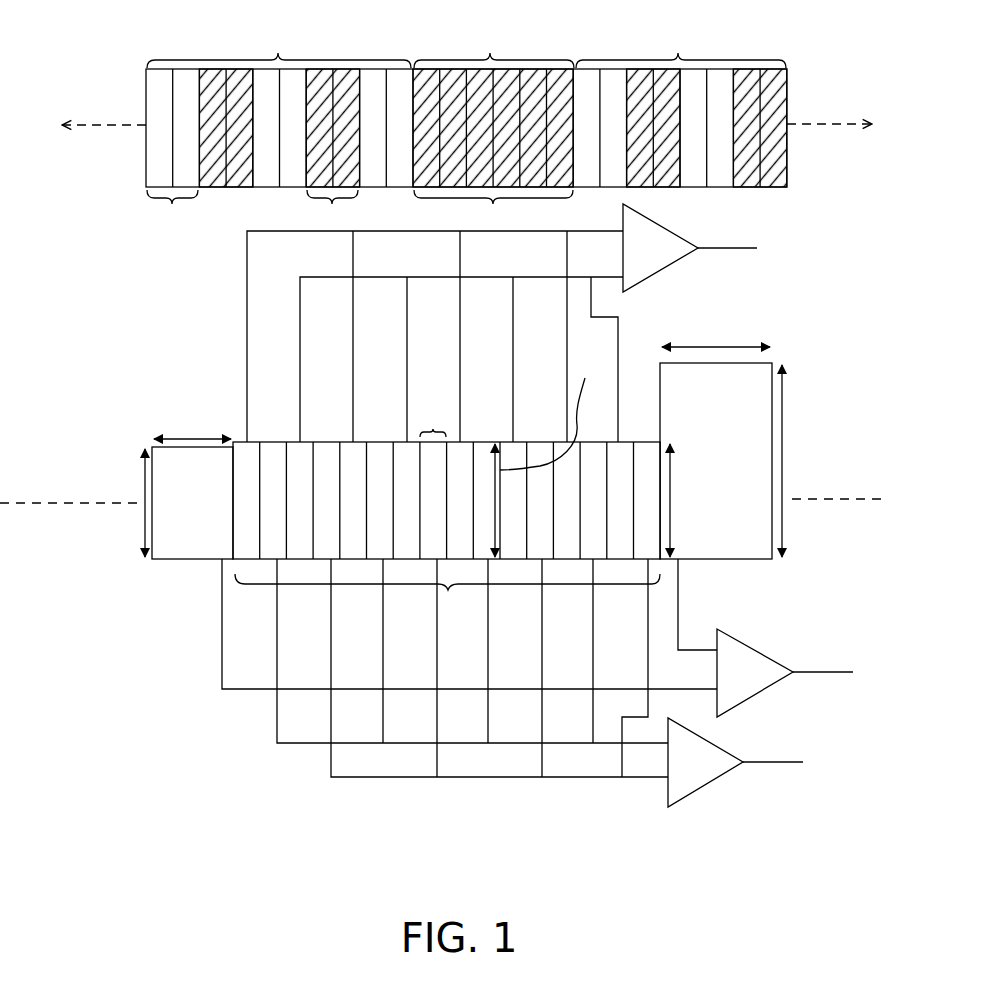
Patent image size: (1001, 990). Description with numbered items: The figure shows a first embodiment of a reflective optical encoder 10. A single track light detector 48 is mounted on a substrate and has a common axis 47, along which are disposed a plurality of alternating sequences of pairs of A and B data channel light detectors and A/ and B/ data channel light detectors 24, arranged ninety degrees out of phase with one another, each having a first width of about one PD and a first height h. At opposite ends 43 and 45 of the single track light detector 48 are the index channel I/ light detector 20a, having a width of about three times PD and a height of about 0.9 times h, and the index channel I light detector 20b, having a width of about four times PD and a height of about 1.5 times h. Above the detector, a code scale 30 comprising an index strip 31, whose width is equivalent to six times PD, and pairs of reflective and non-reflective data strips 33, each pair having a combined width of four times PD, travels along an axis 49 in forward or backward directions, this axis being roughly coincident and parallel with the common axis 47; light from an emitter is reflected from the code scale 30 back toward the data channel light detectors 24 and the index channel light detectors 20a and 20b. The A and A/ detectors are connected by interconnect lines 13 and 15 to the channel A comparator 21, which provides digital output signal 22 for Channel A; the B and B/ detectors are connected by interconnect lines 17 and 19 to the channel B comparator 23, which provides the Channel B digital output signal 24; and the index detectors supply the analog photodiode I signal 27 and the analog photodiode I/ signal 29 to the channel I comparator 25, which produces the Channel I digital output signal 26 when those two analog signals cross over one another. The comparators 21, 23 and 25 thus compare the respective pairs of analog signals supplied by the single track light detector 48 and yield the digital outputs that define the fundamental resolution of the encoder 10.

The reflective optical encoder 10 is at (162, 824).
The channel A interconnect line 13 is at (607, 231).
The channel A-bar interconnect line 15 is at (600, 278).
The channel B interconnect line 17 is at (638, 745).
The channel B-bar interconnect line 19 is at (657, 778).
The index channel I/ light detector 20a is at (192, 545).
The index channel I light detector 20b is at (728, 537).
The channel A comparator 21 is at (668, 267).
The channel A digital output signal 22 is at (733, 250).
The channel B comparator 23 is at (698, 788).
The data channel light detectors 24 is at (448, 592).
The channel I comparator 25 is at (766, 690).
The channel I digital output signal 26 is at (838, 674).
The analog photodiode I signal 27 is at (695, 650).
The analog photodiode I/ signal 29 is at (700, 689).
The code scale 30 is at (118, 88).
The index strip 31 is at (494, 48).
The data strips 33 is at (466, 48).
The first end of single track light detector 43 is at (140, 512).
The second end of single track light detector 45 is at (767, 466).
The common axis 47 is at (37, 503).
The single track light detector 48 is at (110, 427).
The axis of code scale 49 is at (114, 126).